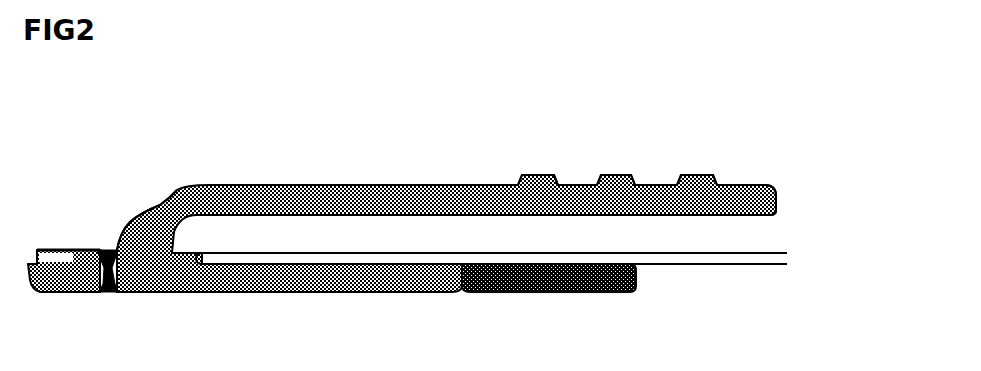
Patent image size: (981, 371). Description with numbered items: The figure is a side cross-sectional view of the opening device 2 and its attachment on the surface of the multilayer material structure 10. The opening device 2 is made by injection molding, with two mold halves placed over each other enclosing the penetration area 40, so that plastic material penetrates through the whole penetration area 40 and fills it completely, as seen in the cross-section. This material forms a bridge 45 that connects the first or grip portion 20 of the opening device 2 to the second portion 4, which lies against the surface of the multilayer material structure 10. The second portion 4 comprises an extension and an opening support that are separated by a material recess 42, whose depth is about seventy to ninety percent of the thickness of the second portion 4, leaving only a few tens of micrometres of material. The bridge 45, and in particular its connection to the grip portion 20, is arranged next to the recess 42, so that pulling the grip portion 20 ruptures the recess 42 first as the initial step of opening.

The opening device 2 is at (221, 180).
The grip portion 20 is at (422, 200).
The second portion 4 is at (490, 293).
The multilayer material structure 10 is at (743, 265).
The penetration area 40 is at (80, 252).
The material recess 42 is at (108, 292).
The bridge 45 is at (115, 250).